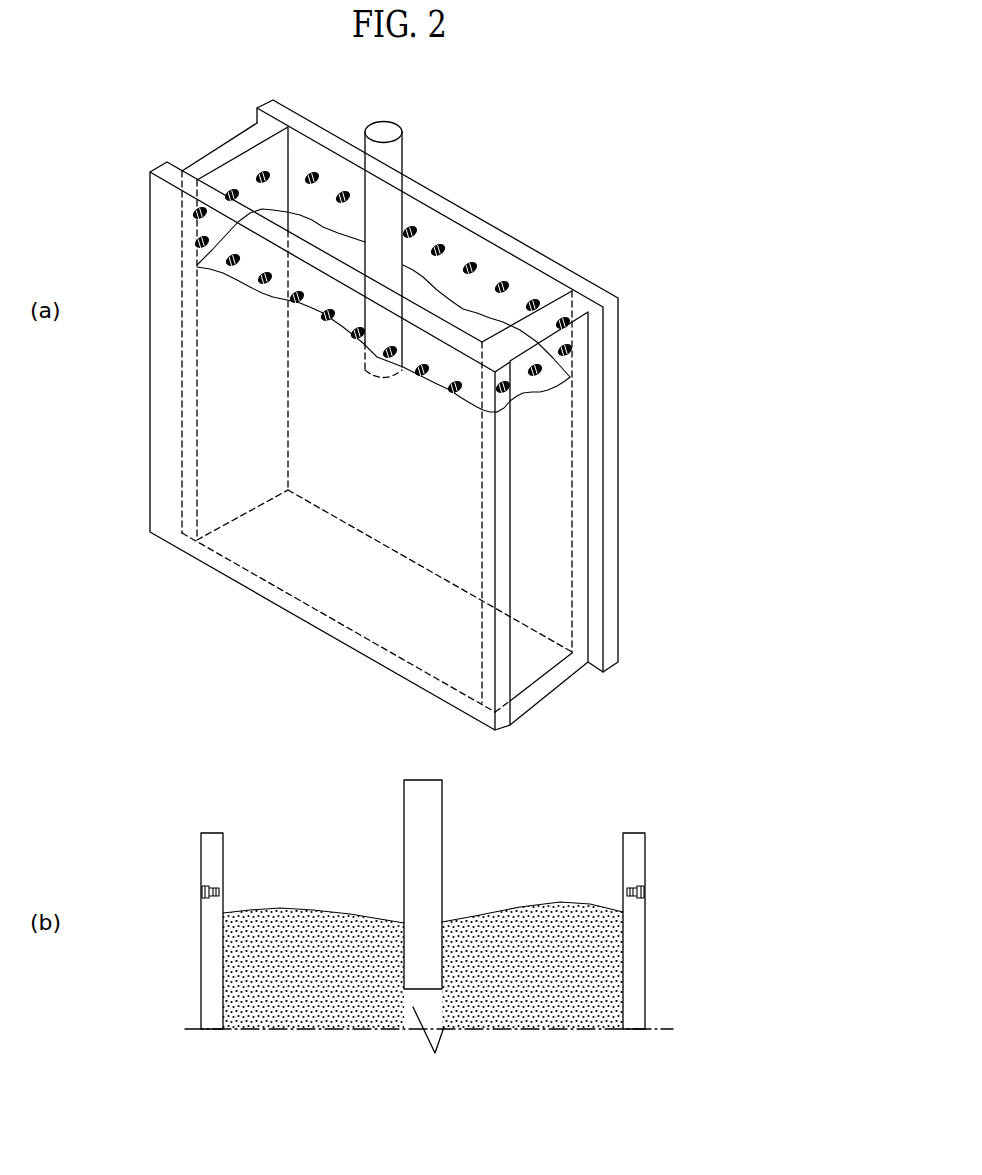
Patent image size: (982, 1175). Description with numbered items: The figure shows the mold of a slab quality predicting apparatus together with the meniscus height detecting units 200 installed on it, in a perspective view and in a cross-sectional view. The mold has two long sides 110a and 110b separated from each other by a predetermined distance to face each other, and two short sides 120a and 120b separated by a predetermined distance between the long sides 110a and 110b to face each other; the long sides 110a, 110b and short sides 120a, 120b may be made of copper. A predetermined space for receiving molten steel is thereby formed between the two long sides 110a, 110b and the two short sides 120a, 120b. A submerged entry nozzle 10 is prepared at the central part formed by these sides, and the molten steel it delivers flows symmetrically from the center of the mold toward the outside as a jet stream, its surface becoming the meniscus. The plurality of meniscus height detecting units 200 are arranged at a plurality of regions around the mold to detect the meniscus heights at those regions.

The submerged entry nozzle 10 is at (405, 153).
The long side 110a is at (263, 105).
The long side 110b is at (150, 170).
The short side 120a is at (215, 147).
The short side 120b is at (562, 306).
The meniscus height detecting unit 200 is at (472, 263).